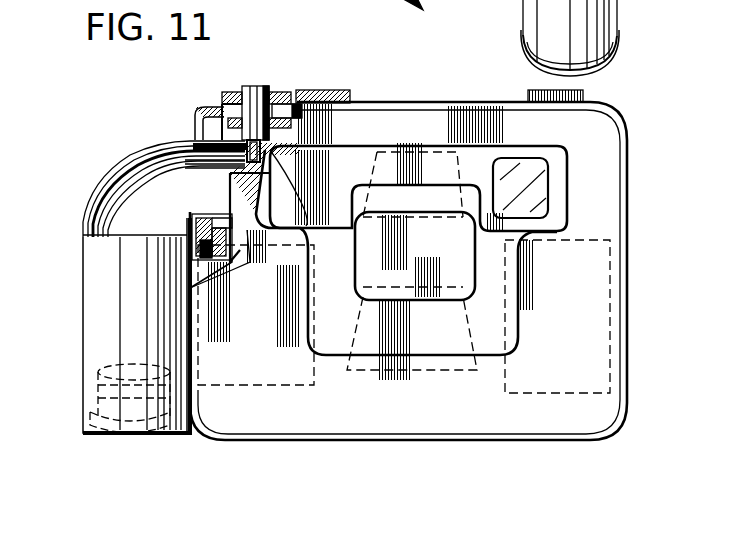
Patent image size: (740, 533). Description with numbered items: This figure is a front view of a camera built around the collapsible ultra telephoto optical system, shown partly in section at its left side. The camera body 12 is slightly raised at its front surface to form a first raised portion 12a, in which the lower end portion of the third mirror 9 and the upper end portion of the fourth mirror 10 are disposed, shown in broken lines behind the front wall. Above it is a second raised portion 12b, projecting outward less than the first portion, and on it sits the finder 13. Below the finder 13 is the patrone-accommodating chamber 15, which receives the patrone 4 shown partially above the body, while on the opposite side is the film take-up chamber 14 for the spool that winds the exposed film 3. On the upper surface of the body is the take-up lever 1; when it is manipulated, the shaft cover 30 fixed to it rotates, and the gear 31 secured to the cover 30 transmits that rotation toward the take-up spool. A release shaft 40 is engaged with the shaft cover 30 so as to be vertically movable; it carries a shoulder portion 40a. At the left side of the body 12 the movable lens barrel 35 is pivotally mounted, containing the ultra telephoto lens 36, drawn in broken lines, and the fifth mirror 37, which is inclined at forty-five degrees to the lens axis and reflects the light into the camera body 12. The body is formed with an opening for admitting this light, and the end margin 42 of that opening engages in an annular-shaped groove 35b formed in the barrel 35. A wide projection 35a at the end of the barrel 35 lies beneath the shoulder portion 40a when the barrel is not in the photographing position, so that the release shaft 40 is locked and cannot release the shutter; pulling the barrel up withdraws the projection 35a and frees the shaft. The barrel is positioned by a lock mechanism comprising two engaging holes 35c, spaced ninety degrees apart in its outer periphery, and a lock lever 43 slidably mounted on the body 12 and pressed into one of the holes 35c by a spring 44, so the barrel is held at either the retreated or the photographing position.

The take-up lever 1 is at (320, 88).
The film 3 is at (437, 8).
The patrone 4 is at (532, 18).
The third mirror 9 is at (423, 150).
The fourth mirror 10 is at (415, 347).
The camera body 12 is at (509, 444).
The first raised portion 12a is at (336, 356).
The second raised portion 12b is at (486, 157).
The finder 13 is at (545, 185).
The film take-up chamber 14 is at (250, 375).
The patrone-accommodating chamber 15 is at (548, 375).
The shaft cover 30 is at (223, 103).
The gear 31 is at (290, 126).
The movable lens barrel 35 is at (95, 307).
The projection 35a is at (306, 200).
The annular-shaped groove 35b is at (195, 222).
The engaging holes 35c is at (220, 216).
The ultra telephoto lens 36 is at (77, 368).
The fifth mirror 37 is at (128, 185).
The release shaft 40 is at (262, 86).
The shoulder portion 40a is at (292, 160).
The end margin 42 is at (195, 135).
The lock lever 43 is at (213, 250).
The spring 44 is at (208, 256).